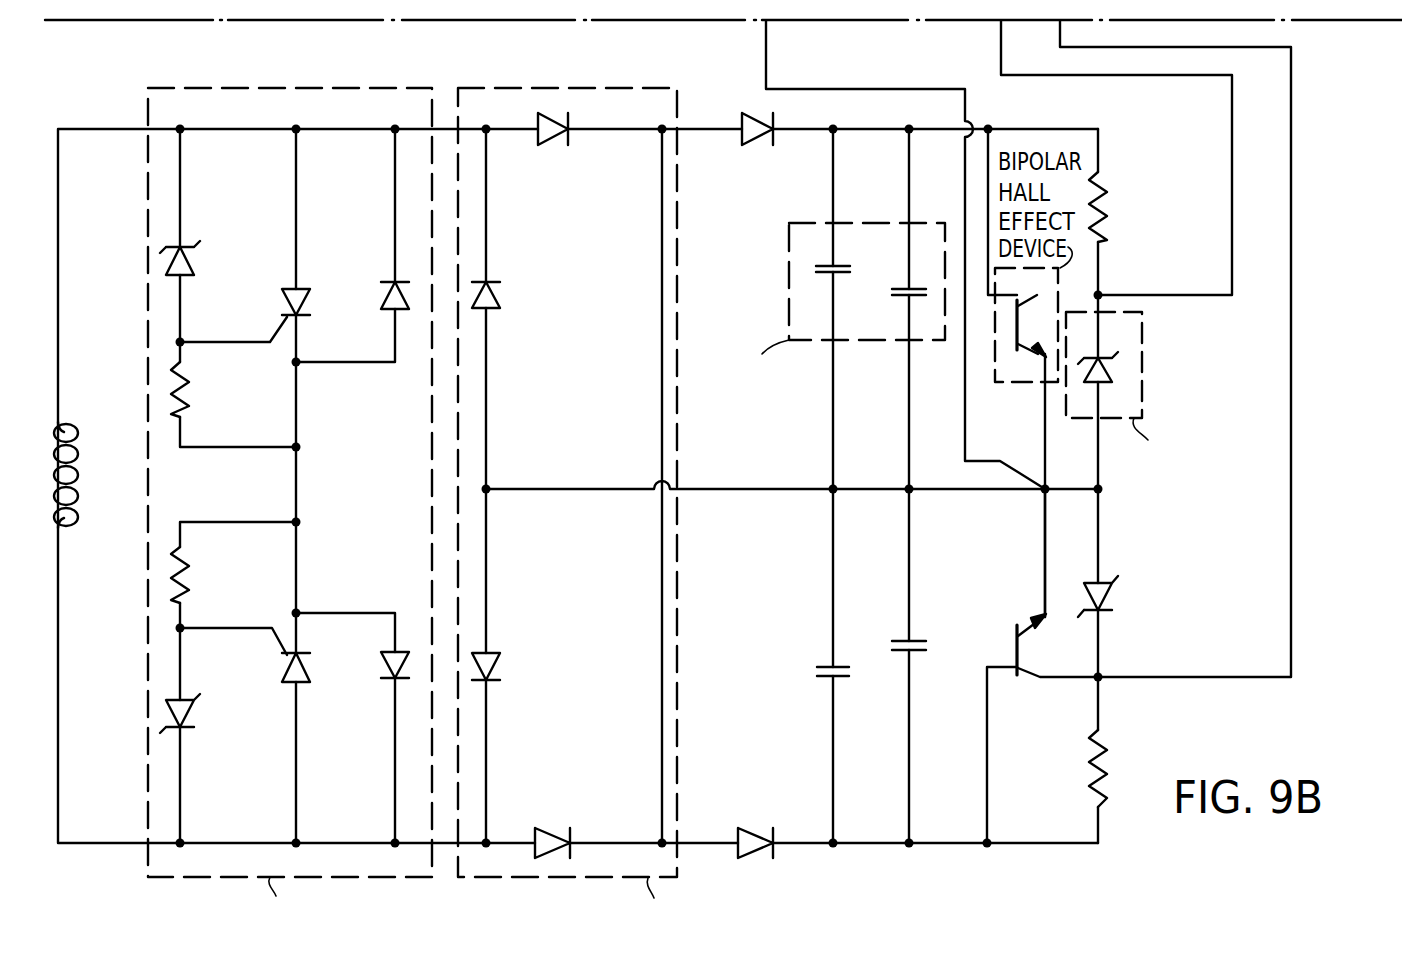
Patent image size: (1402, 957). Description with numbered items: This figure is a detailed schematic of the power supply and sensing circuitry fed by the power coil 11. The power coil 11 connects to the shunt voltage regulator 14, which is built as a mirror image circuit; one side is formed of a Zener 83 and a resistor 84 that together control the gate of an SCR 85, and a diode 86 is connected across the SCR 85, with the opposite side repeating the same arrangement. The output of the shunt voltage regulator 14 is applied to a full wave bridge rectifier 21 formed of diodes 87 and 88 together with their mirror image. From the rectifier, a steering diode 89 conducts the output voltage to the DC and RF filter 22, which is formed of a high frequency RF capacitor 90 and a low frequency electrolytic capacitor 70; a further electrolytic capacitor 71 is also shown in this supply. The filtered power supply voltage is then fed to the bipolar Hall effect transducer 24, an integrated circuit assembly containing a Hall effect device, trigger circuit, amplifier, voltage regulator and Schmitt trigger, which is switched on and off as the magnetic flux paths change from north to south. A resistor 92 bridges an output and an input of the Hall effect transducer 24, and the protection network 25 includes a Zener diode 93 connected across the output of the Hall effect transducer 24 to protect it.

The power coil 11 is at (76, 481).
The shunt voltage regulator 14 is at (432, 877).
The full wave bridge rectifier 21 is at (678, 740).
The DC and RF filter 22 is at (883, 341).
The bipolar Hall effect transducer 24 is at (1010, 382).
The protection network 25 is at (1142, 405).
The electrolytic capacitor 70 is at (904, 288).
The electrolytic capacitor 71 is at (906, 640).
The Zener 83 is at (195, 268).
The resistor 84 is at (190, 396).
The SCR 85 is at (306, 291).
The diode 86 is at (388, 306).
The diode 87 is at (500, 304).
The diode 88 is at (553, 148).
The steering diode 89 is at (762, 148).
The high frequency RF capacitor 90 is at (822, 266).
The resistor 92 is at (1106, 226).
The Zener diode 93 is at (1115, 370).